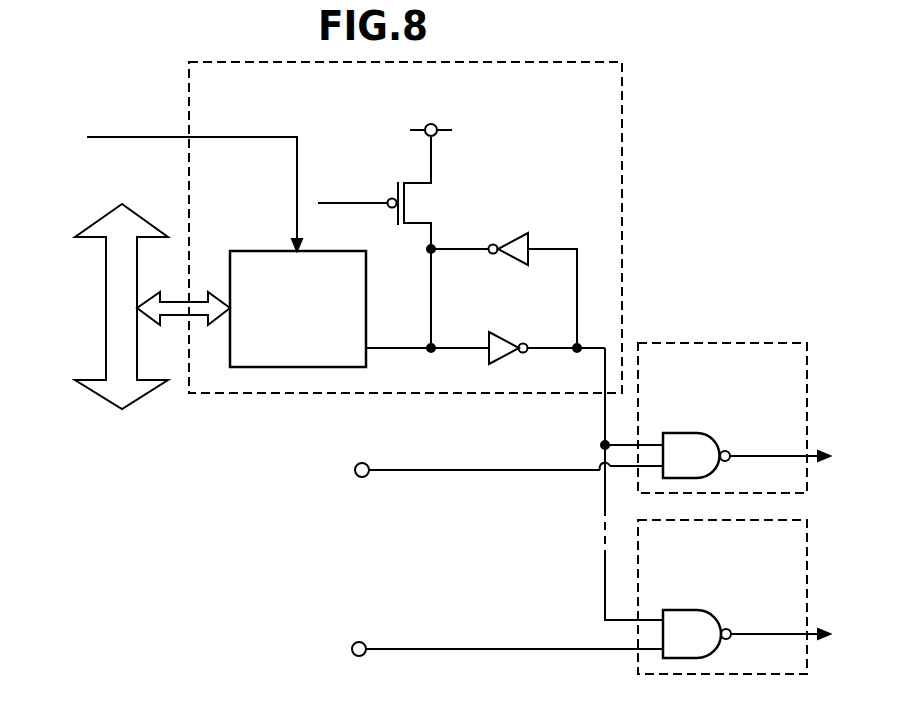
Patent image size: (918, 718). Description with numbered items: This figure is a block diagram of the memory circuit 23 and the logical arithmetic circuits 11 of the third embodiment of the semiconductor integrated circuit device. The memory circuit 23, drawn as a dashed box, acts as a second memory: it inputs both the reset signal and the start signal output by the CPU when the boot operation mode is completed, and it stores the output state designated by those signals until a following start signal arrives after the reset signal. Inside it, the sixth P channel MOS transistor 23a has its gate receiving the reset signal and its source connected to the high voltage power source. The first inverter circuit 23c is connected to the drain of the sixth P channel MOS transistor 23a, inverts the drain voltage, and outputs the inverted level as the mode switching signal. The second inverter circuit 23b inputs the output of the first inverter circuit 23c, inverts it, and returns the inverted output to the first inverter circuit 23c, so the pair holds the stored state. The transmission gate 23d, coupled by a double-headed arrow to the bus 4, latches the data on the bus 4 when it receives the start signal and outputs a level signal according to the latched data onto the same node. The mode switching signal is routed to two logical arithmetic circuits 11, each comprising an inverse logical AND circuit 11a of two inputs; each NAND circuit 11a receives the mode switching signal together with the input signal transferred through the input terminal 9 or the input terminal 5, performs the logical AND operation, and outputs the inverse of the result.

The bus 4 is at (95, 222).
The input terminal 5 is at (358, 641).
The input terminal 9 is at (363, 462).
The logical arithmetic circuit 11 is at (809, 372).
The inverse logical AND circuit 11a is at (720, 441).
The memory circuit 23 is at (623, 85).
The sixth P channel MOS transistor 23a is at (406, 178).
The second inverter circuit 23b is at (492, 245).
The first inverter circuit 23c is at (501, 330).
The transmission gate 23d is at (253, 250).